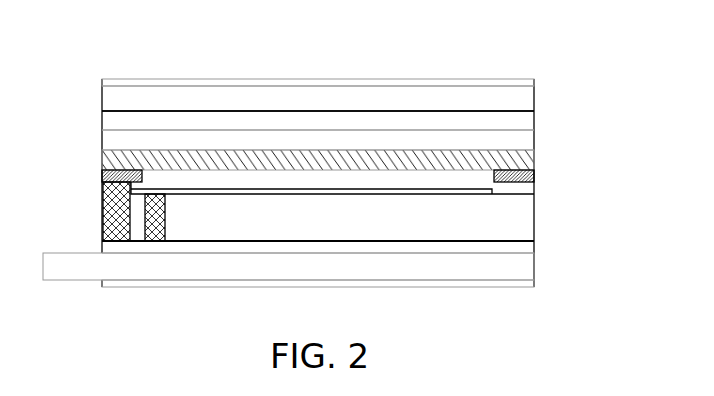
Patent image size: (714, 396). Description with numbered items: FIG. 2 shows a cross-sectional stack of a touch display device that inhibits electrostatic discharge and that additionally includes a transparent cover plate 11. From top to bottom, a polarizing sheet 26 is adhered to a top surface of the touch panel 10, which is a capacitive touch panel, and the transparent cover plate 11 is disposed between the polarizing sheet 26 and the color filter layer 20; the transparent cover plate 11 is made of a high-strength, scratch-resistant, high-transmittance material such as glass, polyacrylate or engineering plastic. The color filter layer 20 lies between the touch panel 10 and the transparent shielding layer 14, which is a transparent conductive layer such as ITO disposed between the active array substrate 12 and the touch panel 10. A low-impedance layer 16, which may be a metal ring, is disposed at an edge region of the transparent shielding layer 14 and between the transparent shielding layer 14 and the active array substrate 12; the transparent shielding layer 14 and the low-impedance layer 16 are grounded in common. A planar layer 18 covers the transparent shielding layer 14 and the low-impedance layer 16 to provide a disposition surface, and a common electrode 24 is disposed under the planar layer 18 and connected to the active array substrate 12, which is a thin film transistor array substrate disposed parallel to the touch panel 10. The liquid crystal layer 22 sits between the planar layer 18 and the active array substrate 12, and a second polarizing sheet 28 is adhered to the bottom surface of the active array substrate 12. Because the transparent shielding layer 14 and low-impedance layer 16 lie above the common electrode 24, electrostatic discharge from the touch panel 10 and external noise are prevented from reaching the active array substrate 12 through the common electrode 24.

The polarizing sheet 26 is at (534, 79).
The transparent cover plate 11 is at (530, 93).
The touch panel 10 is at (530, 112).
The color filter layer 20 is at (530, 133).
The transparent shielding layer 14 is at (530, 155).
The low-impedance layer 16 is at (530, 176).
The planar layer 18 is at (524, 185).
The common electrode 24 is at (486, 196).
The liquid crystal layer 22 is at (530, 237).
The active array substrate 12 is at (530, 258).
The polarizing sheet 28 is at (530, 282).